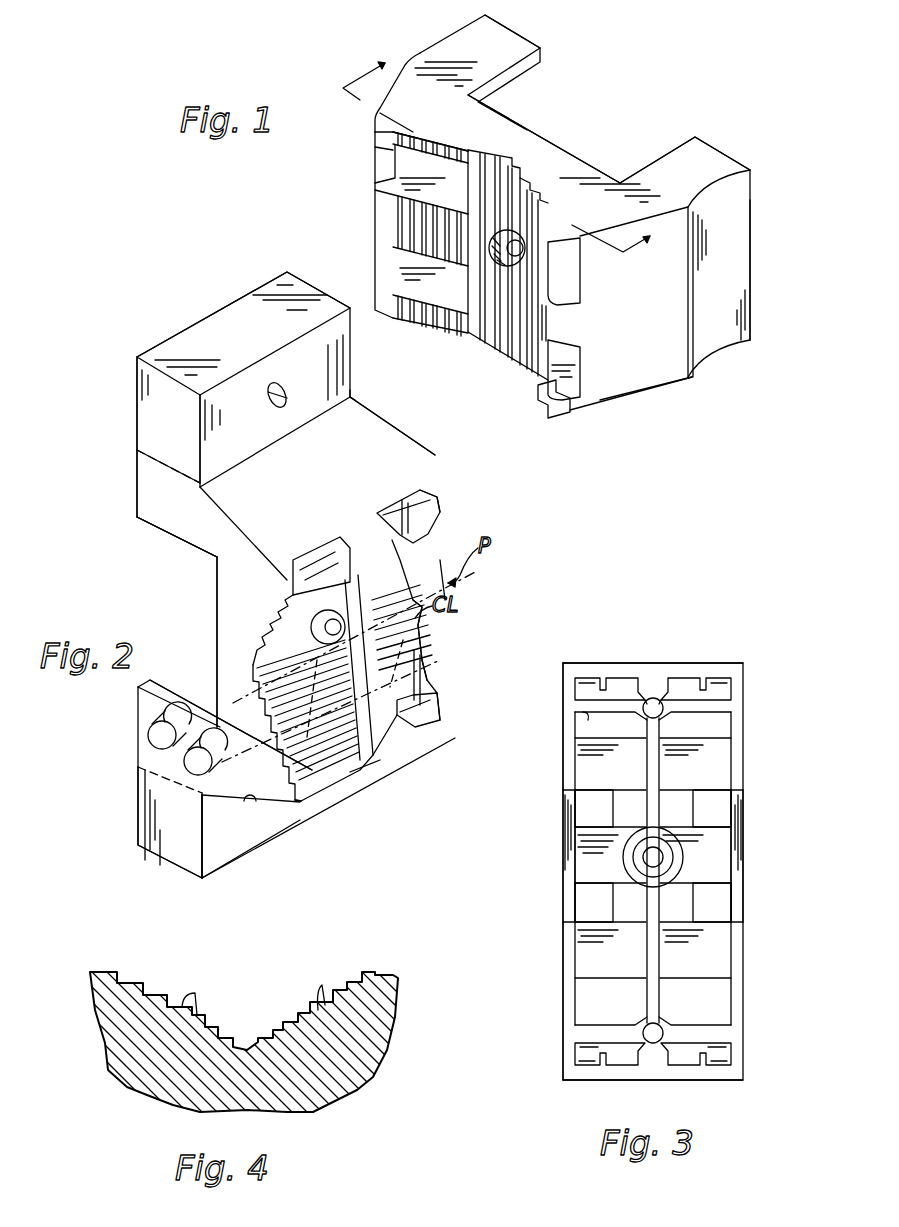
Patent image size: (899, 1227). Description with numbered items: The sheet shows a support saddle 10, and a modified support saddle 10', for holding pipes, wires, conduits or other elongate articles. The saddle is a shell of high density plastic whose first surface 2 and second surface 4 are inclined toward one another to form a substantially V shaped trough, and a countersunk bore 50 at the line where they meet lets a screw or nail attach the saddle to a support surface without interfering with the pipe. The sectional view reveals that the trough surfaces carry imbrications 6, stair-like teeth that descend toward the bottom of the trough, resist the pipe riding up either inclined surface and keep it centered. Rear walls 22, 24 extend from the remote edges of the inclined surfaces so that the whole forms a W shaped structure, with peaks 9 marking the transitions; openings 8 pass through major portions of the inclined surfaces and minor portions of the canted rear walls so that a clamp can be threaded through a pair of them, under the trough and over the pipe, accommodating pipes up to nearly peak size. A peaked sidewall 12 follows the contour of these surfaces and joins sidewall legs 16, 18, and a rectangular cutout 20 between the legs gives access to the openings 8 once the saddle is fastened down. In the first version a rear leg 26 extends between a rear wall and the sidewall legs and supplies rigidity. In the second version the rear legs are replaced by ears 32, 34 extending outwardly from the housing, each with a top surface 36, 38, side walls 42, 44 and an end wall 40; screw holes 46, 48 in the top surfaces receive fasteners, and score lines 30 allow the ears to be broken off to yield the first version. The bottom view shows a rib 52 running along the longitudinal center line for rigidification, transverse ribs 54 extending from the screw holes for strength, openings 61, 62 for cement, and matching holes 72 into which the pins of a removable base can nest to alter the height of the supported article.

In FIG. 1, the support saddle 10 is at (546, 212).
In FIG. 2, the support saddle 10 is at (296, 779).
In FIG. 2, the modified support saddle 10' is at (395, 639).
In FIG. 3, the modified support saddle 10' is at (612, 871).
In FIG. 1, the first surface 2 is at (462, 330).
In FIG. 1, the second surface 4 is at (528, 365).
In FIG. 1, the imbrications 6 is at (462, 148).
In FIG. 2, the imbrications 6 is at (432, 676).
In FIG. 4, the imbrications 6 is at (192, 1003).
In FIG. 1, the openings 8 is at (402, 182).
In FIG. 2, the openings 8 is at (312, 558).
In FIG. 3, the openings 8 is at (578, 808).
In FIG. 1, the peaks 9 is at (376, 137).
In FIG. 2, the peaks 9 is at (440, 497).
In FIG. 2, the first peaked sidewall 12 is at (230, 585).
In FIG. 1, the sidewall leg 16 is at (525, 38).
In FIG. 2, the sidewall leg 16 is at (145, 512).
In FIG. 1, the sidewall leg 18 is at (725, 155).
In FIG. 2, the sidewall leg 18 is at (148, 730).
In FIG. 1, the rectangular cutout 20 is at (578, 142).
In FIG. 2, the rectangular cutout 20 is at (190, 545).
In FIG. 3, the rectangular cutout 20 is at (570, 855).
In FIG. 2, the rear wall 22 is at (395, 445).
In FIG. 1, the rear wall 24 is at (625, 403).
In FIG. 1, the rear leg 26 is at (720, 368).
In FIG. 2, the score lines 30 is at (140, 462).
In FIG. 2, the ear 32 is at (158, 328).
In FIG. 2, the ear 34 is at (215, 880).
In FIG. 2, the top surface 36 is at (350, 392).
In FIG. 2, the top surface 38 is at (242, 853).
In FIG. 2, the end wall 40 is at (240, 298).
In FIG. 3, the end wall 40 is at (655, 663).
In FIG. 2, the side wall 42 is at (140, 420).
In FIG. 3, the side wall 42 is at (565, 770).
In FIG. 2, the side wall 44 is at (140, 815).
In FIG. 3, the side wall 44 is at (565, 1012).
In FIG. 2, the screw hole 46 is at (283, 382).
In FIG. 3, the screw hole 46 is at (658, 700).
In FIG. 2, the screw hole 48 is at (262, 808).
In FIG. 3, the screw hole 48 is at (662, 1025).
In FIG. 1, the bore 50 is at (492, 240).
In FIG. 2, the bore 50 is at (316, 640).
In FIG. 3, the bore 50 is at (672, 852).
In FIG. 3, the rib 52 is at (655, 775).
In FIG. 3, the transverse ribs 54 is at (583, 722).
In FIG. 3, the opening for cement 61 is at (625, 672).
In FIG. 3, the opening for cement 62 is at (580, 1048).
In FIG. 3, the matching holes 72 is at (575, 684).